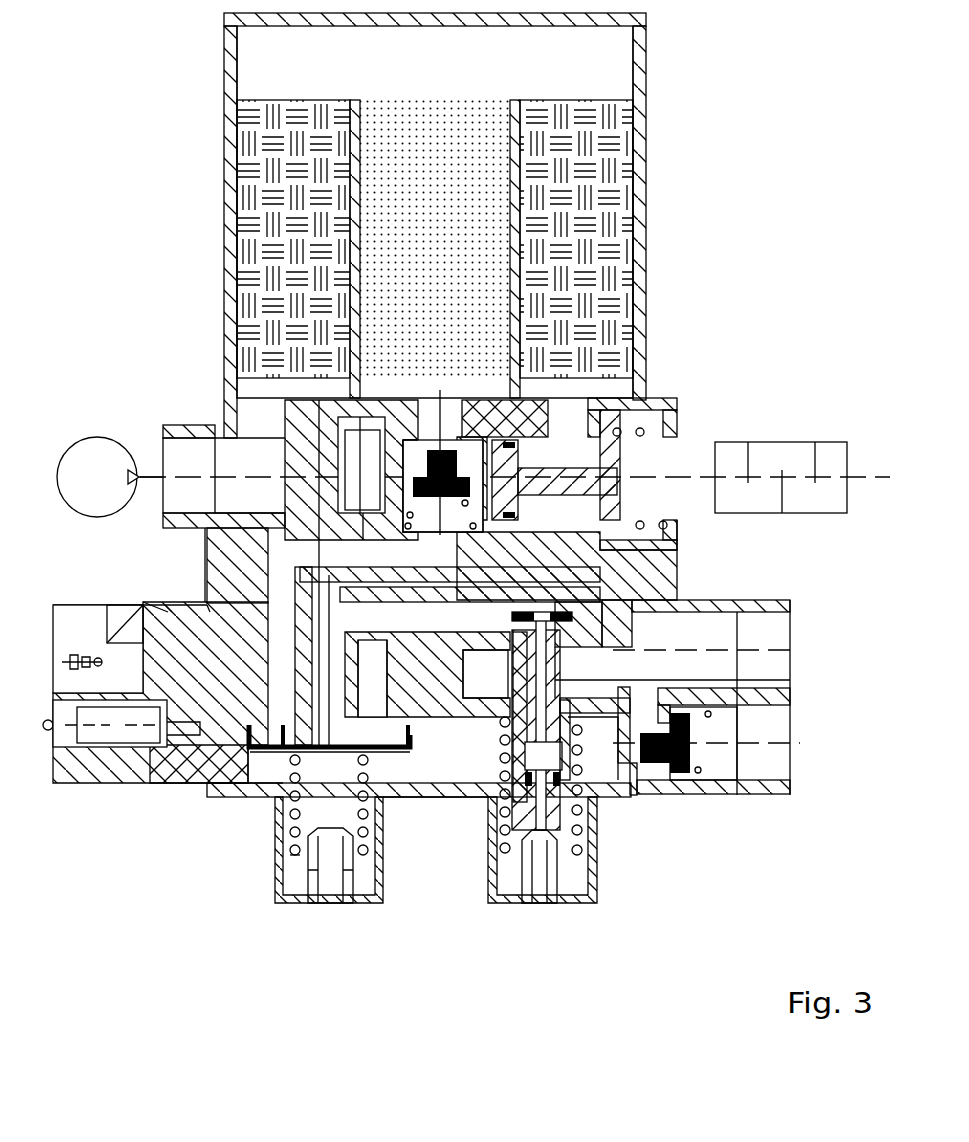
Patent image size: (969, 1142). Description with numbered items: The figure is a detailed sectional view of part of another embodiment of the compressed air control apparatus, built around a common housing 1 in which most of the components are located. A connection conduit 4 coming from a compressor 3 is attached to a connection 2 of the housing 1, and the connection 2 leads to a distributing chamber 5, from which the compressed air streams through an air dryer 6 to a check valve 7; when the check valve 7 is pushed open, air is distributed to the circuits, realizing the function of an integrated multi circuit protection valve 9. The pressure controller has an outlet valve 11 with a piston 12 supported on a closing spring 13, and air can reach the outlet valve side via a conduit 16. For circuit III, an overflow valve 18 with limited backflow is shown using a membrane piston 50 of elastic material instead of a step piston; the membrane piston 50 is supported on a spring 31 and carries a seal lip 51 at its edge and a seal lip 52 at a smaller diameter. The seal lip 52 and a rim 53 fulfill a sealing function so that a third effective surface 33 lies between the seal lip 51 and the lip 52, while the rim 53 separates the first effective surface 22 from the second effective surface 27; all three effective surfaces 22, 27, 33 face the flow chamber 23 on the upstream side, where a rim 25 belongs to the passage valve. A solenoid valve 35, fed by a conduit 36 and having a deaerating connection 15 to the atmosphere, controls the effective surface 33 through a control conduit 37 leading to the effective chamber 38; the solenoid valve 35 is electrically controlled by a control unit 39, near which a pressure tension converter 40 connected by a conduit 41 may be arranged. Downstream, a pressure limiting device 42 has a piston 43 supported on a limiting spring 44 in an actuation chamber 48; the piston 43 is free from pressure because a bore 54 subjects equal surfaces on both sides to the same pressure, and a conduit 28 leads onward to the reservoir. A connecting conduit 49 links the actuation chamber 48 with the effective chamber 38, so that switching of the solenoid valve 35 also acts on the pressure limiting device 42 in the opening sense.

The housing 1 is at (657, 572).
The connection 2 is at (181, 455).
The compressor 3 is at (78, 458).
The connection conduit 4 is at (147, 470).
The distributing chamber 5 is at (240, 455).
The air dryer 6 is at (652, 116).
The check valve 7 is at (458, 452).
The multi circuit protection valve 9 is at (203, 843).
The overflow valve 18 is at (280, 831).
The outlet valve 11 is at (680, 388).
The piston 12 is at (613, 462).
The closing spring 13 is at (641, 522).
The deaerating connection 15 is at (50, 718).
The conduit 16 is at (677, 542).
The first effective surface 22 is at (390, 797).
The flow chamber 23 is at (430, 797).
The rim 25 is at (388, 800).
The second effective surface 27 is at (318, 465).
The conduit 28 is at (772, 600).
The spring 31 is at (290, 856).
The third effective surface 33 is at (378, 693).
The solenoid valve 35 is at (97, 733).
The conduit 36 is at (147, 750).
The control conduit 37 is at (197, 745).
The effective chamber 38 is at (405, 720).
The control unit 39 is at (72, 638).
The pressure tension converter 40 is at (105, 612).
The conduit 41 is at (168, 612).
The pressure limiting device 42 is at (637, 845).
The piston 43 is at (640, 765).
The limiting spring 44 is at (592, 895).
The actuation chamber 48 is at (540, 850).
The connecting conduit 49 is at (478, 903).
The membrane piston 50 is at (290, 815).
The seal lip 51 is at (197, 785).
The seal lip 52 is at (210, 612).
The rim 53 is at (172, 612).
The bore 54 is at (740, 685).
The circuit III is at (790, 650).